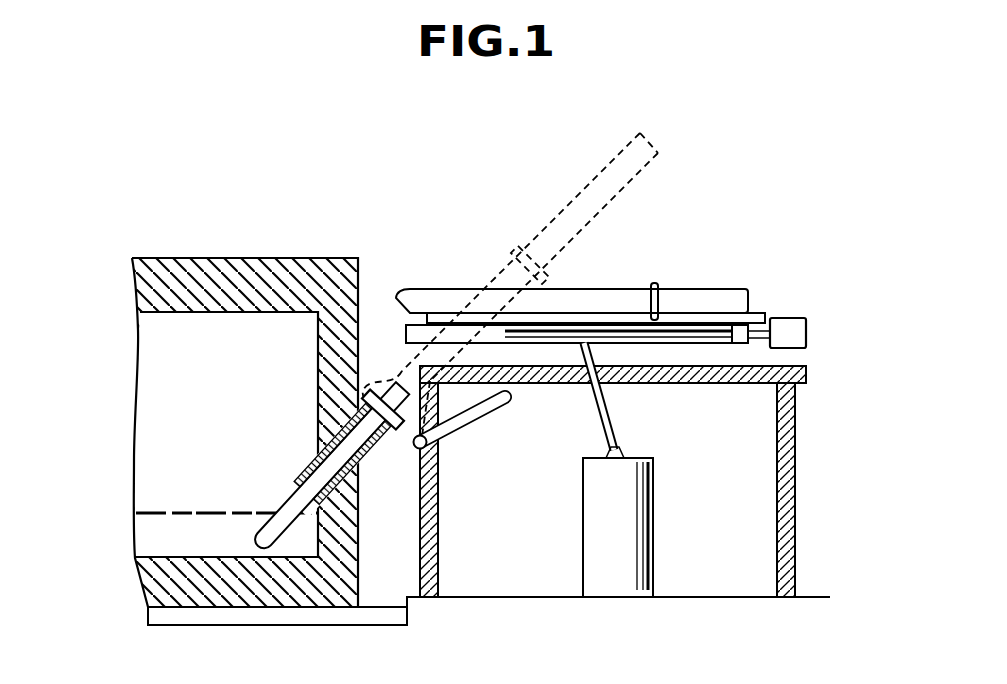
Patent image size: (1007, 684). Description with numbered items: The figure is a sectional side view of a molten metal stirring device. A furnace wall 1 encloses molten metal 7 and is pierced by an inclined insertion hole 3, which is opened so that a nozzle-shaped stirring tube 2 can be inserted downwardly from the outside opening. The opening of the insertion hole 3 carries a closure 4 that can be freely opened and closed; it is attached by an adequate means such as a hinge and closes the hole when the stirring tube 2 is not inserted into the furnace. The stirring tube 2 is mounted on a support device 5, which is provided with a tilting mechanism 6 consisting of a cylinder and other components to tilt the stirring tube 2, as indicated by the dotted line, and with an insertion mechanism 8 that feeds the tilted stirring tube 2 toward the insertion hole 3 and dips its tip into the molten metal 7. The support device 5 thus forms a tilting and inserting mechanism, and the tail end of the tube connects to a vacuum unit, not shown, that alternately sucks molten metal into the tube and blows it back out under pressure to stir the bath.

The furnace wall 1 is at (290, 258).
The stirring tube 2 is at (296, 480).
The insertion hole 3 is at (360, 512).
The closure 4 is at (468, 428).
The support device 5 is at (796, 507).
The tilting mechanism 6 is at (607, 398).
The molten metal 7 is at (191, 549).
The insertion mechanism 8 is at (785, 310).